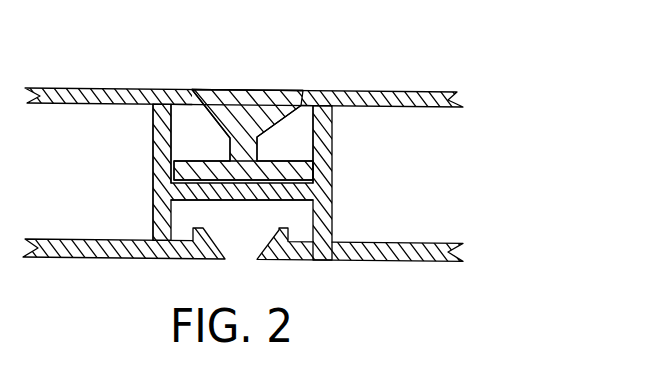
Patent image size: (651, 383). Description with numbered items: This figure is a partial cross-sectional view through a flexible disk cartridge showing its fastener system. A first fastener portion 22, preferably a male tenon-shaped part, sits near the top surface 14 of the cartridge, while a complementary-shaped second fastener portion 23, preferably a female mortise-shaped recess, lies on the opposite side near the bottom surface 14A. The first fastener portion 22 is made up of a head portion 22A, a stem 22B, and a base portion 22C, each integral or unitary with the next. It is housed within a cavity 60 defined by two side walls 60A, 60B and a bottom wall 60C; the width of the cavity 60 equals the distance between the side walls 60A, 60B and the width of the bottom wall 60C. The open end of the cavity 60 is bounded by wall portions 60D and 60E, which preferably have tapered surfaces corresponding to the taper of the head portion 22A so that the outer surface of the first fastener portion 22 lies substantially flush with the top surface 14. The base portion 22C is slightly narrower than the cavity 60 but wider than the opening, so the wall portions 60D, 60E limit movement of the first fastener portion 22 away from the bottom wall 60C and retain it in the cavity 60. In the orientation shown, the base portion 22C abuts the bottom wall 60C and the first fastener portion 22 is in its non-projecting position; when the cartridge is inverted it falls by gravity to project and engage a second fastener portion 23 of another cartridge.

The top surface 14 is at (414, 91).
The bottom surface 14A is at (402, 263).
The first fastener portion 22 is at (264, 78).
The head portion 22A is at (228, 89).
The stem 22B is at (238, 126).
The base portion 22C is at (313, 162).
The second fastener portion 23 is at (253, 239).
The cavity 60 is at (316, 120).
The side wall 60A is at (324, 147).
The side wall 60B is at (168, 124).
The bottom wall 60C is at (172, 165).
The wall portion 60D is at (187, 89).
The wall portion 60E is at (307, 92).